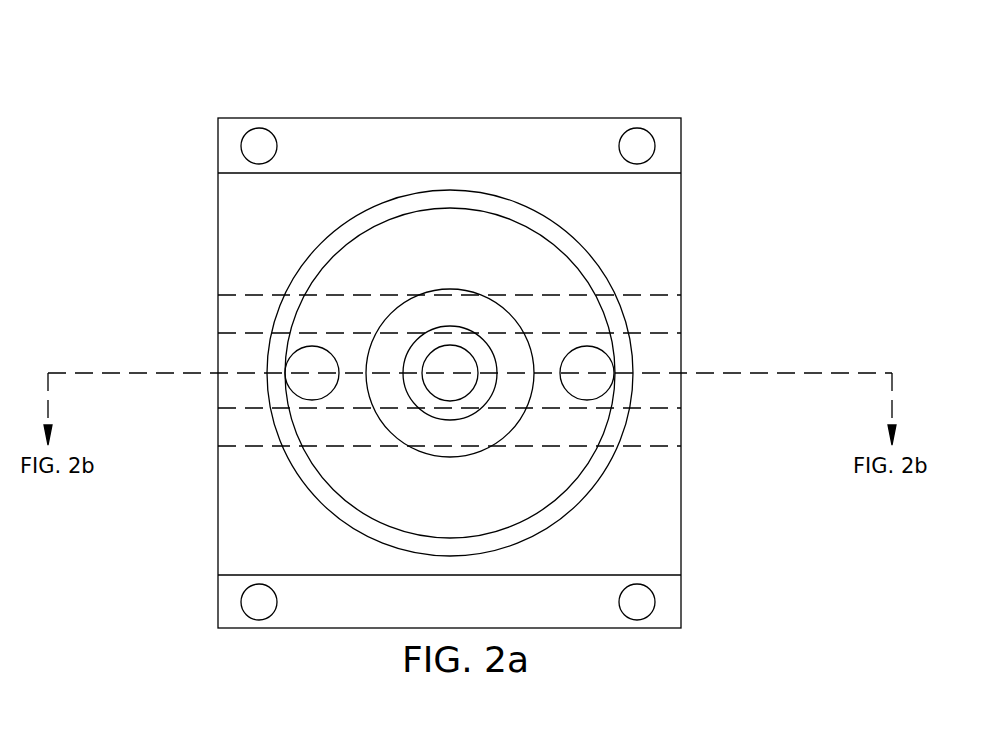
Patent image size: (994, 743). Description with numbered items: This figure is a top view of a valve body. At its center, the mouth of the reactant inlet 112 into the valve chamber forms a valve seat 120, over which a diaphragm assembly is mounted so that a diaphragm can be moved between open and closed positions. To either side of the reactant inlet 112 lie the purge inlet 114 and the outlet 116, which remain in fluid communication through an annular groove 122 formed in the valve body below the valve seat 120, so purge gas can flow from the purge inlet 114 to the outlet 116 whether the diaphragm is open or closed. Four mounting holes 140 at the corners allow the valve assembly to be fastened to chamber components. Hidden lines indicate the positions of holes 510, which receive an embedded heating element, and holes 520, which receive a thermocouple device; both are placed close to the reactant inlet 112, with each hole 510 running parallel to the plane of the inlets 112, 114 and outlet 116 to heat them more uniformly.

The reactant inlet 112 is at (475, 387).
The purge inlet 114 is at (590, 362).
The outlet 116 is at (306, 363).
The valve seat 120 is at (467, 342).
The groove 122 is at (423, 257).
The mounting holes 140 is at (244, 130).
The holes for embedded heating element 510 is at (665, 317).
The holes for thermocouple device 520 is at (642, 433).